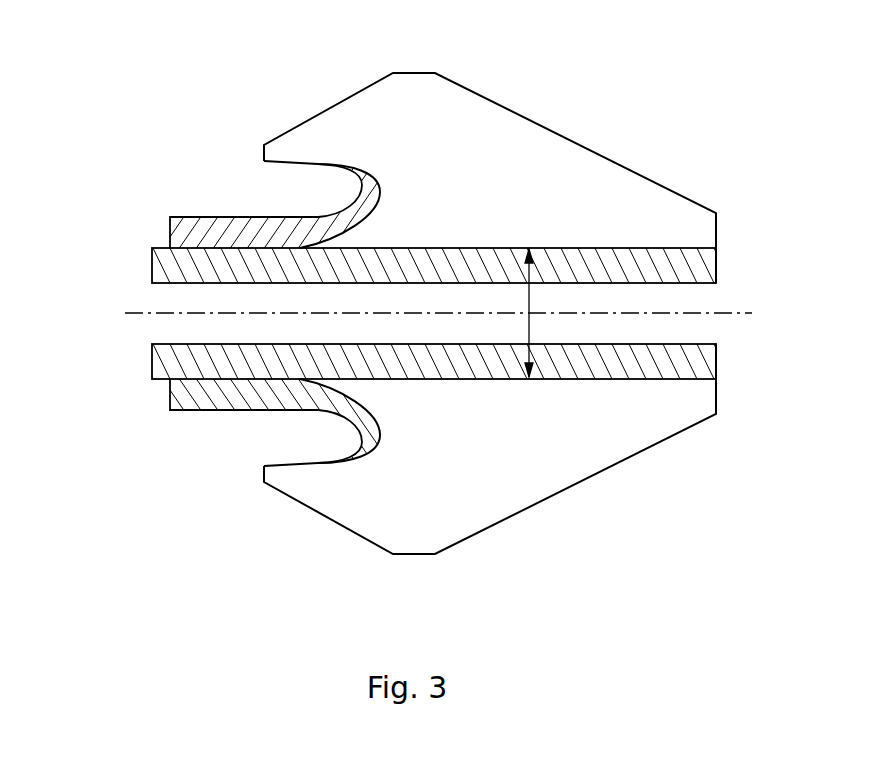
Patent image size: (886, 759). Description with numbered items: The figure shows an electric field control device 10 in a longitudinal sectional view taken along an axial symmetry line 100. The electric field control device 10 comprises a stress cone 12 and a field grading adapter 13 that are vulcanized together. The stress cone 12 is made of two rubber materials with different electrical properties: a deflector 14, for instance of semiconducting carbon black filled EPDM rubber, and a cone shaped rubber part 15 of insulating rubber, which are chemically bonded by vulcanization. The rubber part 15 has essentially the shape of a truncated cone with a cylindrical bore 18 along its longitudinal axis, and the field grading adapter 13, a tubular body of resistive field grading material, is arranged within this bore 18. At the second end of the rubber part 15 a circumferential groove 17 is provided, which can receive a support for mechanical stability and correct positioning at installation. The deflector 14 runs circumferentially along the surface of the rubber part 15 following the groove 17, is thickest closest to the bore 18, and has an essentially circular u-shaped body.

The electric field control device 10 is at (428, 336).
The stress cone 12 is at (490, 299).
The field grading adapter 13 is at (706, 270).
The deflector 14 is at (318, 225).
The cone shaped rubber part 15 is at (508, 138).
The circumferential groove 17 is at (287, 441).
The cylindrical bore 18 is at (529, 330).
The axial symmetry line 100 is at (125, 313).